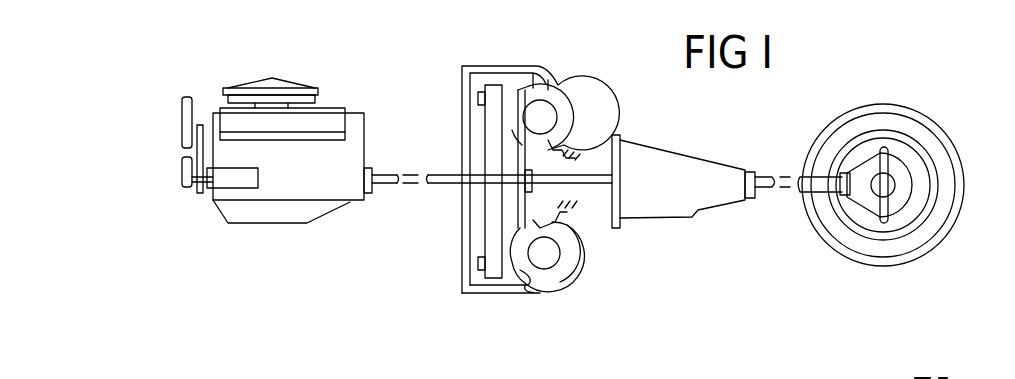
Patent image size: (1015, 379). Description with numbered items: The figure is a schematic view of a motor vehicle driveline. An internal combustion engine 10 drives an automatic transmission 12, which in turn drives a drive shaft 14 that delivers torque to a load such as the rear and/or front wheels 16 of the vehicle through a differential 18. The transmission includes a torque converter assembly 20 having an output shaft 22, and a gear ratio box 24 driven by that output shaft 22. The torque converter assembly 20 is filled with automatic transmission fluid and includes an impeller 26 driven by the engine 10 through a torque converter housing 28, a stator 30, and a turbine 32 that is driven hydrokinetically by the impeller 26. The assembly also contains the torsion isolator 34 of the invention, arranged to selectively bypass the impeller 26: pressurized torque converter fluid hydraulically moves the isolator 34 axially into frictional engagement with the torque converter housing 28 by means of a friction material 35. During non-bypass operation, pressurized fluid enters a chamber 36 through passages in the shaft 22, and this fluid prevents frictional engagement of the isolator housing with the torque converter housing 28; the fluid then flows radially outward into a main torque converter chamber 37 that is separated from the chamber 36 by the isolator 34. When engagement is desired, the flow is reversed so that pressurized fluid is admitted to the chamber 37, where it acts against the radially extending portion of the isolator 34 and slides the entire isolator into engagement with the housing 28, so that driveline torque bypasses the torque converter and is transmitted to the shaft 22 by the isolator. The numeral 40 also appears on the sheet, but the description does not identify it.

The internal combustion engine 10 is at (205, 224).
The automatic transmission 12 is at (683, 196).
The drive shaft 14 is at (768, 197).
The wheels 16 is at (903, 170).
The differential 18 is at (918, 178).
The torque converter assembly 20 is at (511, 166).
The output shaft 22 is at (597, 188).
The gear ratio box 24 is at (670, 217).
The impeller 26 is at (574, 122).
The torque converter housing 28 is at (462, 102).
The stator 30 is at (550, 153).
The turbine 32 is at (520, 88).
The torsion isolator 34 is at (465, 137).
The friction material 35 is at (479, 253).
The chamber 36 is at (477, 208).
The main torque converter chamber 37 is at (507, 267).
The base 40 is at (188, 367).